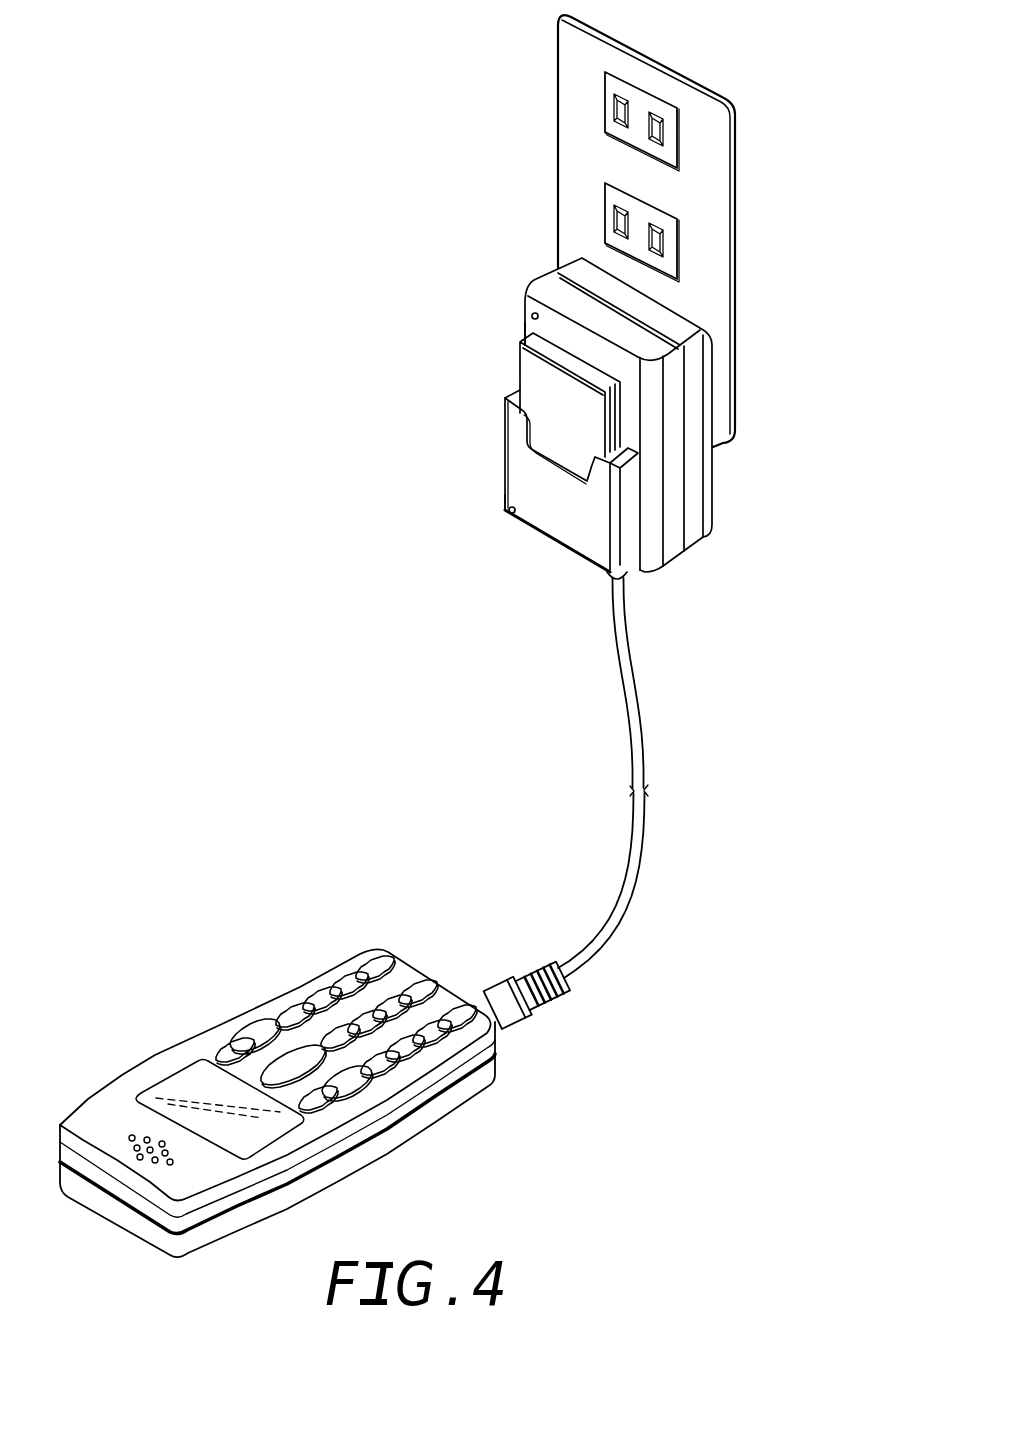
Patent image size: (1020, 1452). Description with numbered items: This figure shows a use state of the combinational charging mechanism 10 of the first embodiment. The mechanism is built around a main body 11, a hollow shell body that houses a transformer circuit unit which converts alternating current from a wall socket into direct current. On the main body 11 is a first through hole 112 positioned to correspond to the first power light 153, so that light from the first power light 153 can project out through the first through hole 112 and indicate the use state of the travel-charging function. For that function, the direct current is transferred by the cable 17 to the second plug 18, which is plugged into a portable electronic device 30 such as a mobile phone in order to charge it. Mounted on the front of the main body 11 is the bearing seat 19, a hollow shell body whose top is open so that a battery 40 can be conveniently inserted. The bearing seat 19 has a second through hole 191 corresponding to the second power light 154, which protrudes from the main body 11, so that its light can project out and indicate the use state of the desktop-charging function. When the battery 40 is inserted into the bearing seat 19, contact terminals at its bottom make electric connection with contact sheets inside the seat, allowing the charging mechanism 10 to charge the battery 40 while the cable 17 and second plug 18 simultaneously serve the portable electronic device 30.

The combinational charging mechanism 10 is at (619, 355).
The main body 11 is at (727, 510).
The first through hole 112 is at (532, 315).
The first power light 153 is at (535, 323).
The second power light 154 is at (509, 513).
The bearing seat 19 is at (515, 455).
The second through hole 191 is at (507, 507).
The battery 40 is at (533, 372).
The cable 17 is at (632, 762).
The second plug 18 is at (524, 1016).
The portable electronic device 30 is at (212, 988).